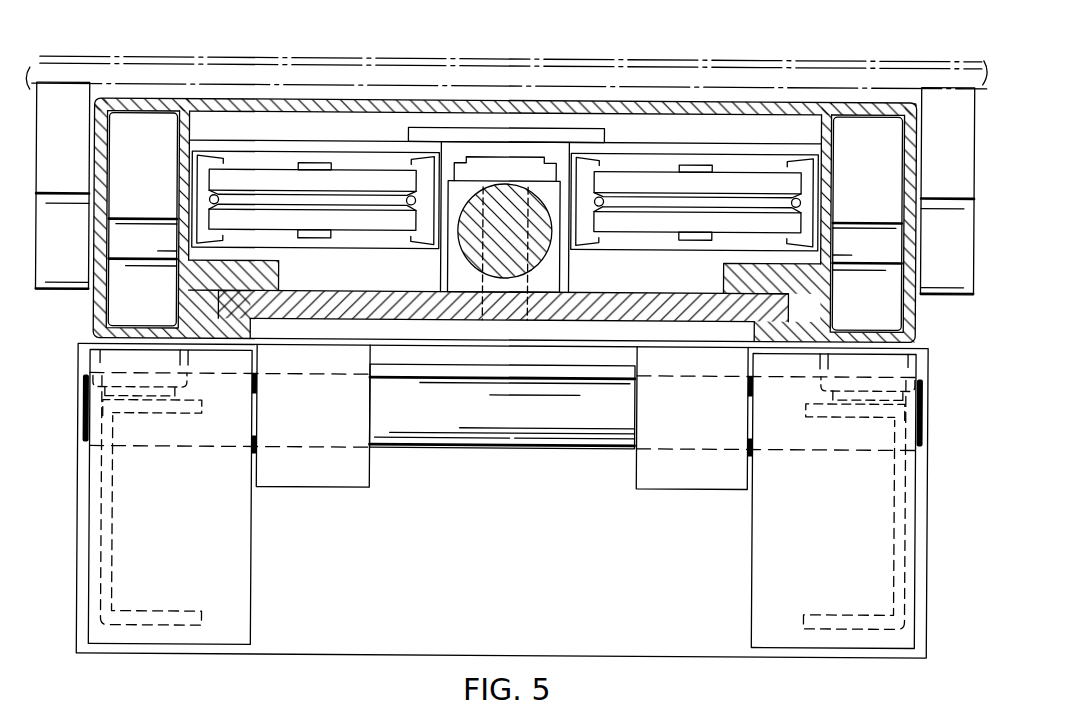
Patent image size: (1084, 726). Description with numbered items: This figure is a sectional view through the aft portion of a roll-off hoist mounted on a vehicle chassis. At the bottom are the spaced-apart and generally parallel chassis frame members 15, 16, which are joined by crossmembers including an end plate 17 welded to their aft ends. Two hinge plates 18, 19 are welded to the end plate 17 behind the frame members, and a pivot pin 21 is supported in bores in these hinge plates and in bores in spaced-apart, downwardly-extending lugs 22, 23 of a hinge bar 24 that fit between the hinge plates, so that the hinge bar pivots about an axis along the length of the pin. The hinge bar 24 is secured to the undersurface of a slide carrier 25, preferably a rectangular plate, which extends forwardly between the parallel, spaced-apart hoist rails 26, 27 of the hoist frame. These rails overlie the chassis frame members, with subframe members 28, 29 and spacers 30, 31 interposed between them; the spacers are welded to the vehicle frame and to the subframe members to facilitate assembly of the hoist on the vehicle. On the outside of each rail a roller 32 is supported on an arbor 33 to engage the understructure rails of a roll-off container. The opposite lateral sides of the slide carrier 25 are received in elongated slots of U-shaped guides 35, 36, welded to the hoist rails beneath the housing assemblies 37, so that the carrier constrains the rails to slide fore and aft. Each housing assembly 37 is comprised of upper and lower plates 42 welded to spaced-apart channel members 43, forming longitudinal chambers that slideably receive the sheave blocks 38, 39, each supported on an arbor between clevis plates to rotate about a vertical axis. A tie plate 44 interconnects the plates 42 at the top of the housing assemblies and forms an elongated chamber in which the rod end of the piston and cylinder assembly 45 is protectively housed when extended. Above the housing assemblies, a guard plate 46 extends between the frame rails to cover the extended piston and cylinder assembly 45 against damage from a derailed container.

The chassis frame member 15 is at (150, 612).
The chassis frame member 16 is at (813, 618).
The end plate 17 is at (477, 638).
The hinge plate 18 is at (252, 557).
The hinge plate 19 is at (753, 560).
The pivot pin 21 is at (558, 451).
The lug 22 is at (312, 488).
The lug 23 is at (692, 489).
The hinge bar 24 is at (405, 358).
The slide carrier 25 is at (683, 322).
The hoist rail 26 is at (138, 99).
The hoist rail 27 is at (871, 101).
The subframe member 28 is at (88, 360).
The subframe member 29 is at (905, 369).
The spacer 30 is at (147, 394).
The spacer 31 is at (863, 398).
The roller 32 is at (47, 194).
The arbor 33 is at (127, 218).
The guide 35 is at (278, 280).
The guide 36 is at (723, 282).
The housing assembly 37 is at (258, 137).
The sheave block 38 is at (354, 167).
The sheave block 39 is at (667, 167).
The plate 42 is at (314, 141).
The channel member 43 is at (197, 157).
The tie plate 44 is at (451, 128).
The piston and cylinder assembly 45 is at (516, 216).
The guard plate 46 is at (229, 100).